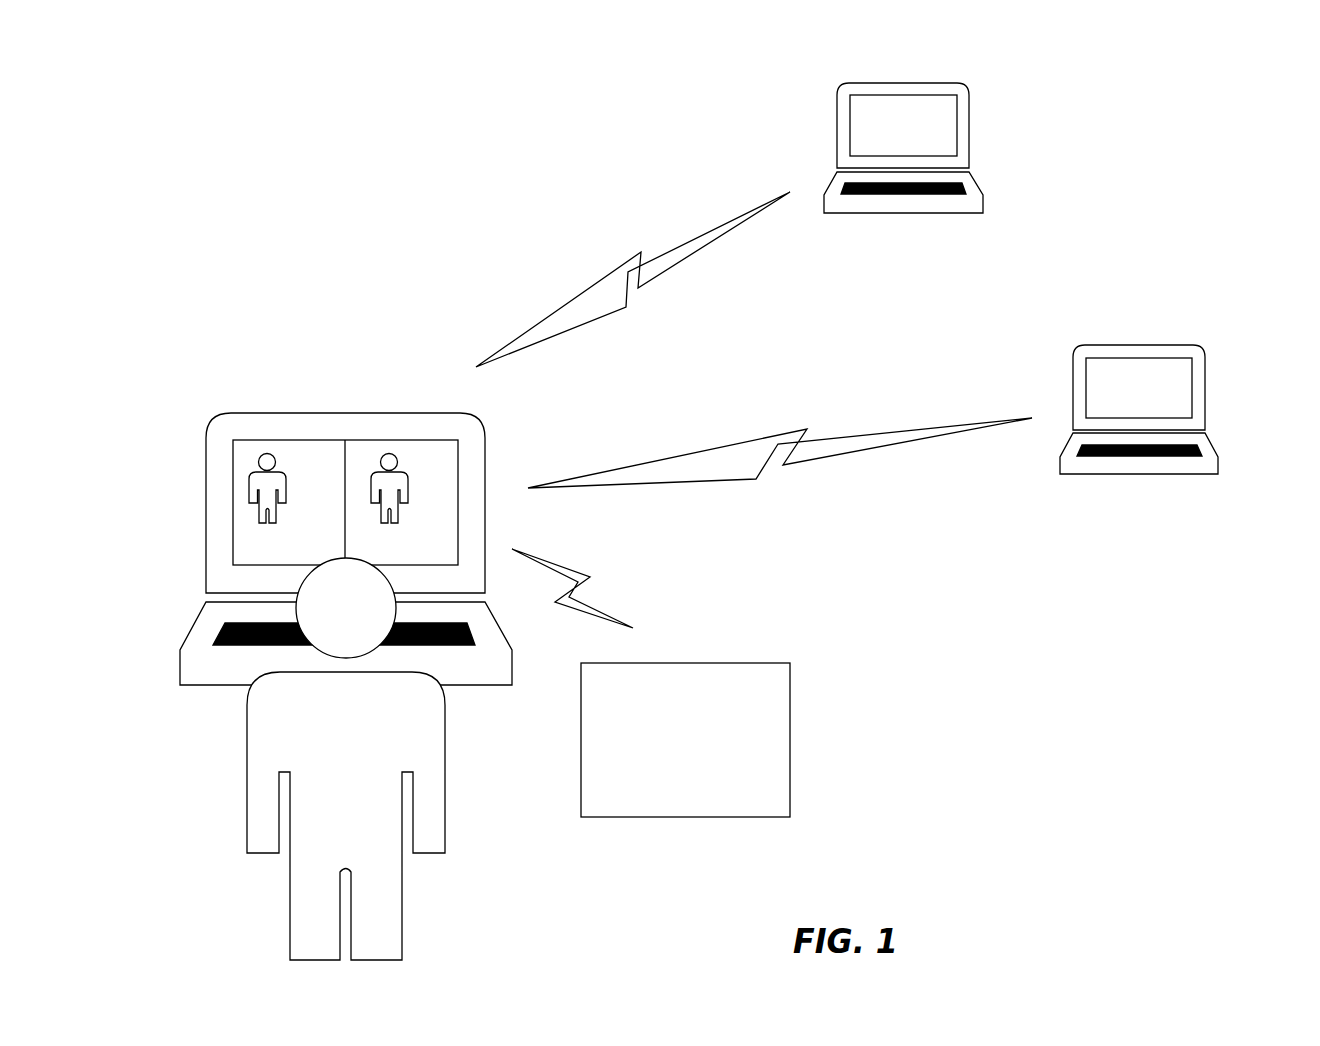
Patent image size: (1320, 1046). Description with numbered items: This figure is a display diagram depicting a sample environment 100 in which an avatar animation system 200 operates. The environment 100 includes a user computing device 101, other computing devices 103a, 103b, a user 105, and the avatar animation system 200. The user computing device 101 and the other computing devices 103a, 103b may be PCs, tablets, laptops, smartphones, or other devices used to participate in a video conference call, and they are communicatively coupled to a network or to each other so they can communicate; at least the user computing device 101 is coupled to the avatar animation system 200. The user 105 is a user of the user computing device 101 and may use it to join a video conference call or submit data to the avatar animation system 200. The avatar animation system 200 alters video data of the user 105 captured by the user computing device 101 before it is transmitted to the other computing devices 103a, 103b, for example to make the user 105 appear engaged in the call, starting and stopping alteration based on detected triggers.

The environment 100 is at (1139, 133).
The user computing device 101 is at (343, 413).
The other computing device 103a is at (964, 91).
The other computing device 103b is at (1205, 383).
The user 105 is at (440, 803).
The avatar animation system 200 is at (790, 683).